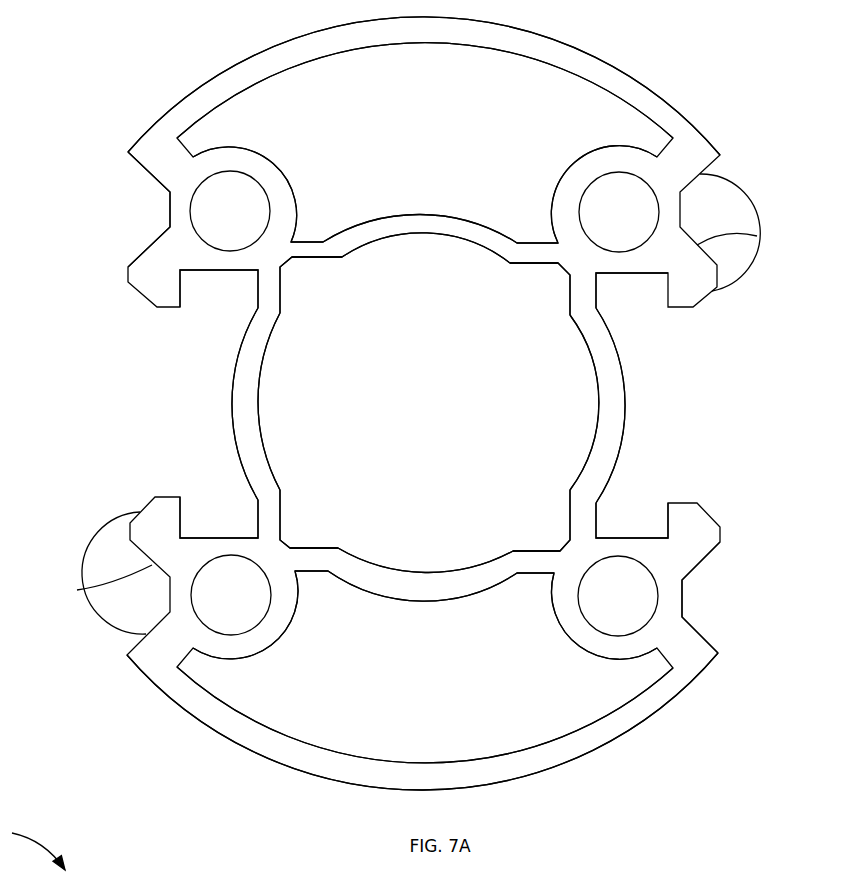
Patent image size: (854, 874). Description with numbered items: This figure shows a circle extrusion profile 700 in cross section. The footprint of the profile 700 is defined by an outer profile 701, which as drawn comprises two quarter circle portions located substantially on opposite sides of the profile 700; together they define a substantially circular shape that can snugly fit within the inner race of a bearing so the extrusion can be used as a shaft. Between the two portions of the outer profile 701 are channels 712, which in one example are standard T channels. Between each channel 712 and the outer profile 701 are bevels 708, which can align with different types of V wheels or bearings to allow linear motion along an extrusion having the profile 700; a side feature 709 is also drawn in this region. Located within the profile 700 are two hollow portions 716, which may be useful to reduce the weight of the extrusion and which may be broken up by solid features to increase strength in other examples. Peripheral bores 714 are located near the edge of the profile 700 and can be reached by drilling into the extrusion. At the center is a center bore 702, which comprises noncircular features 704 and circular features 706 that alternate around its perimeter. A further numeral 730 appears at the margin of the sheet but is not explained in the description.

The profile 700 is at (115, 75).
The outer profile 701 is at (268, 62).
The center bore 702 is at (412, 415).
The noncircular features 704 is at (330, 258).
The circular features 706 is at (420, 234).
The bevels 708 is at (757, 236).
The side notch 709 is at (170, 210).
The channels 712 is at (165, 418).
The peripheral bores 714 is at (217, 221).
The hollow portions 716 is at (407, 135).
The adjacent profile 730 is at (838, 862).